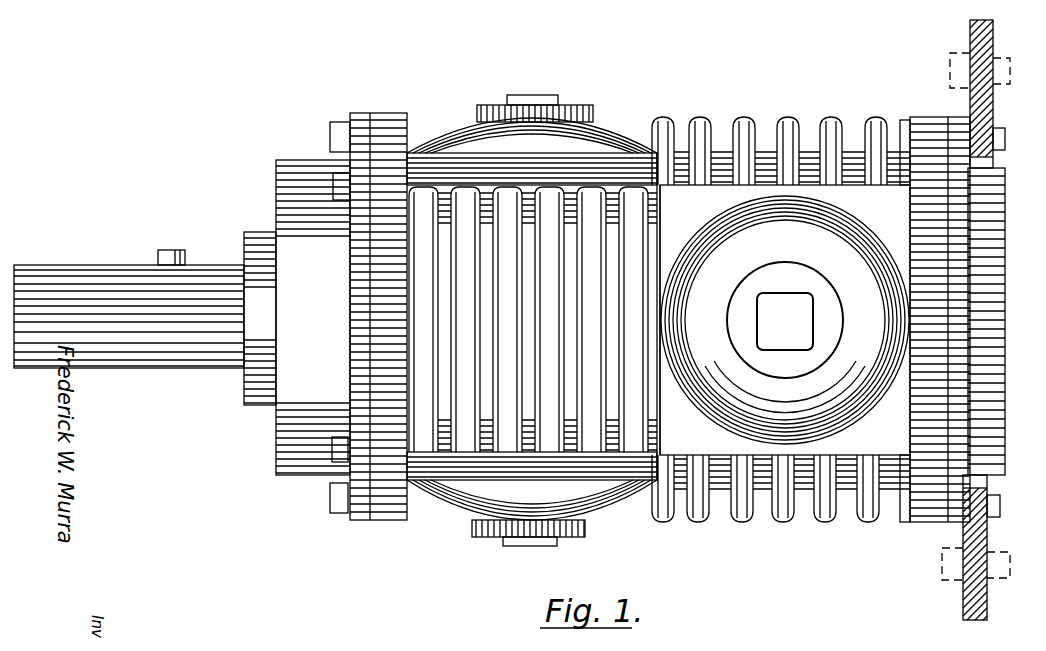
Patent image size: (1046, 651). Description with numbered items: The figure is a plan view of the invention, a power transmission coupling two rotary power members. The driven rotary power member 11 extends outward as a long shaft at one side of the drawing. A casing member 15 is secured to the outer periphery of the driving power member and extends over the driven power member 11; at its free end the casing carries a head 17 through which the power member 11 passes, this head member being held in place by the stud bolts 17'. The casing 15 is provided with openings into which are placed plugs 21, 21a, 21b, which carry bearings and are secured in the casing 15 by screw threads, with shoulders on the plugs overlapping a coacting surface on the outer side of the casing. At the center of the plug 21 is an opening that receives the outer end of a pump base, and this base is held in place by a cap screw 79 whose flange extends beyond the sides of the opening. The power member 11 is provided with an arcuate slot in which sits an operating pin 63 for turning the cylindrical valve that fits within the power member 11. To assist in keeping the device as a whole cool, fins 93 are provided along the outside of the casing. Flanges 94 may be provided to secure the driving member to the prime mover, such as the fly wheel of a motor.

The rotary power member 11 is at (144, 360).
The operating pin 63 is at (184, 256).
The head 17 is at (360, 324).
The stud bolts 17' is at (316, 314).
The plug 21 is at (594, 133).
The plug 21a is at (607, 512).
The plug 21b is at (857, 236).
The fins 93 is at (471, 188).
The cap screw 79 is at (549, 96).
The casing member 15 is at (917, 117).
The flanges 94 is at (987, 100).